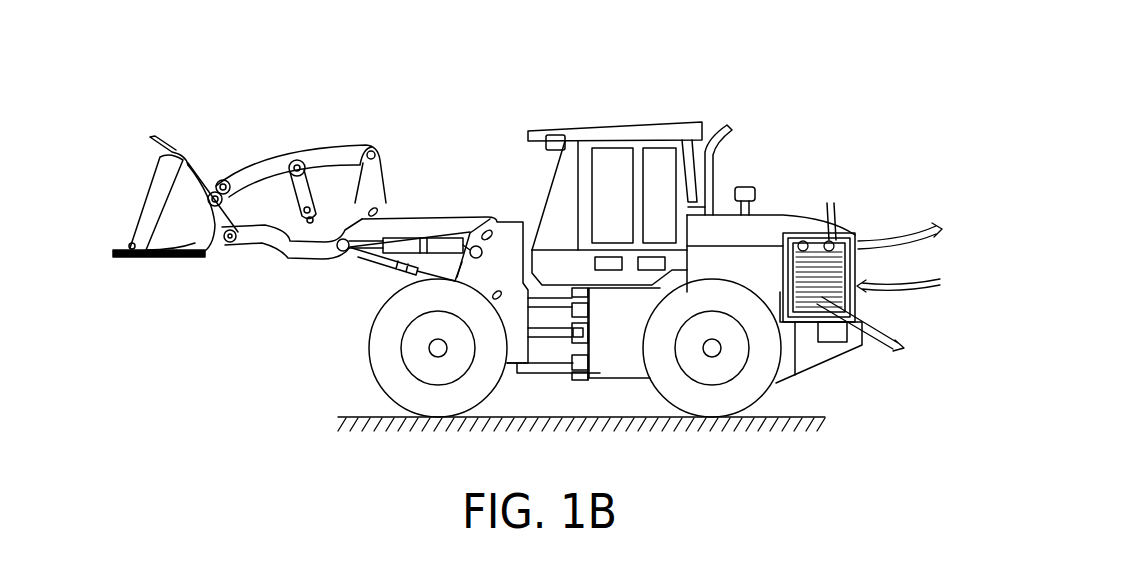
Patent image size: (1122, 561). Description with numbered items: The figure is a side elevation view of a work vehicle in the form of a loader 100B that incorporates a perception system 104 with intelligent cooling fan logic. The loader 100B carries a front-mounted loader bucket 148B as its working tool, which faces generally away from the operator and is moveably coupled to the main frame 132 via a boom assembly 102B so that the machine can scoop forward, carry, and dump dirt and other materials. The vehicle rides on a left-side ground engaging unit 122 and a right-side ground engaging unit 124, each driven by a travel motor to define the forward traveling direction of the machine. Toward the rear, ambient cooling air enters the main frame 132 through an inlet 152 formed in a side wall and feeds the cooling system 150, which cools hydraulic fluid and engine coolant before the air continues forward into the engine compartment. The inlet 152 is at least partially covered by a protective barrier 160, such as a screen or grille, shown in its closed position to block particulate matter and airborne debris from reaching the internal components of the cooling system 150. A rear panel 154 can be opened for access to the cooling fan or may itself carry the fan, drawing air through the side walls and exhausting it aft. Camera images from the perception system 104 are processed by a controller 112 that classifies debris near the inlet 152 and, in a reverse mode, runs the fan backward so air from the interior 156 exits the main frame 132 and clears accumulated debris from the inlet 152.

The loader 100B is at (456, 85).
The boom assembly 102B is at (282, 282).
The loader bucket 148B is at (158, 243).
The perception system 104 is at (612, 262).
The controller 112 is at (647, 262).
The left-side ground engaging unit 122 is at (385, 362).
The right-side ground engaging unit 124 is at (580, 396).
The main frame 132 is at (617, 360).
The cooling system 150 is at (843, 187).
The inlet 152 is at (803, 244).
The rear panel 154 is at (858, 249).
The interior 156 is at (913, 269).
The protective barrier 160 is at (850, 301).